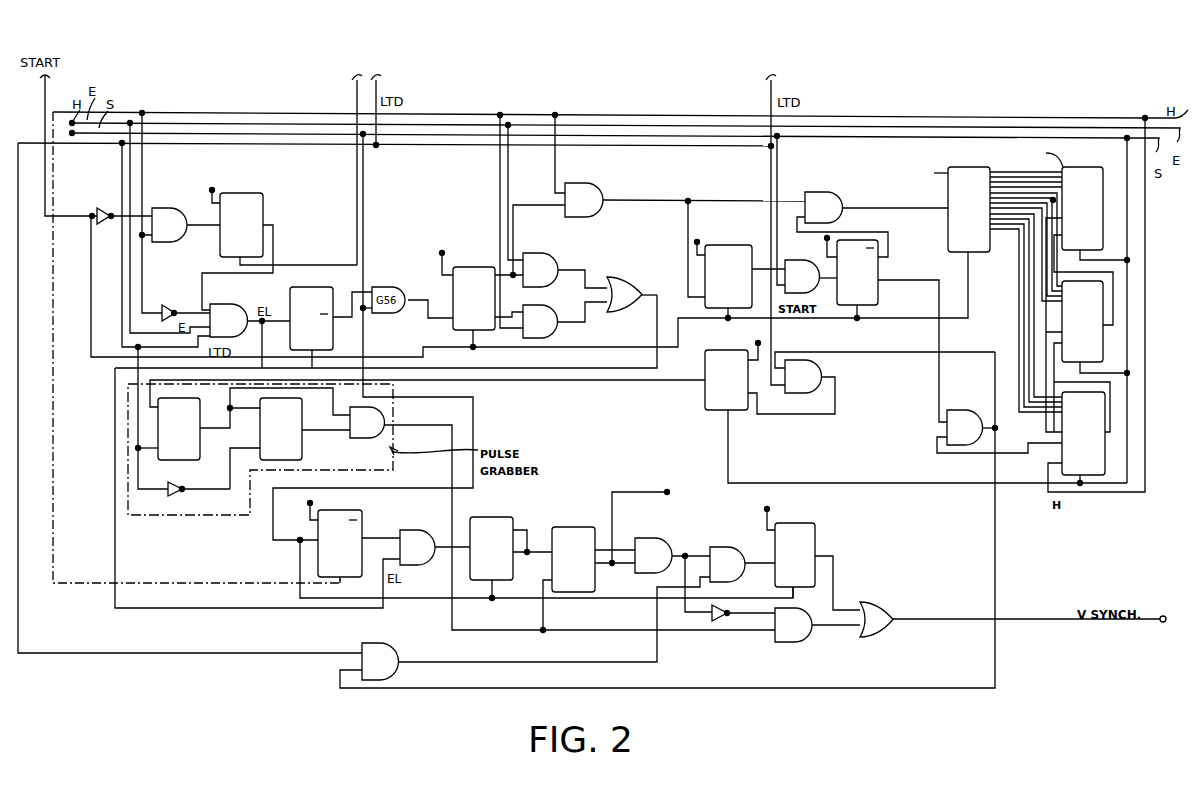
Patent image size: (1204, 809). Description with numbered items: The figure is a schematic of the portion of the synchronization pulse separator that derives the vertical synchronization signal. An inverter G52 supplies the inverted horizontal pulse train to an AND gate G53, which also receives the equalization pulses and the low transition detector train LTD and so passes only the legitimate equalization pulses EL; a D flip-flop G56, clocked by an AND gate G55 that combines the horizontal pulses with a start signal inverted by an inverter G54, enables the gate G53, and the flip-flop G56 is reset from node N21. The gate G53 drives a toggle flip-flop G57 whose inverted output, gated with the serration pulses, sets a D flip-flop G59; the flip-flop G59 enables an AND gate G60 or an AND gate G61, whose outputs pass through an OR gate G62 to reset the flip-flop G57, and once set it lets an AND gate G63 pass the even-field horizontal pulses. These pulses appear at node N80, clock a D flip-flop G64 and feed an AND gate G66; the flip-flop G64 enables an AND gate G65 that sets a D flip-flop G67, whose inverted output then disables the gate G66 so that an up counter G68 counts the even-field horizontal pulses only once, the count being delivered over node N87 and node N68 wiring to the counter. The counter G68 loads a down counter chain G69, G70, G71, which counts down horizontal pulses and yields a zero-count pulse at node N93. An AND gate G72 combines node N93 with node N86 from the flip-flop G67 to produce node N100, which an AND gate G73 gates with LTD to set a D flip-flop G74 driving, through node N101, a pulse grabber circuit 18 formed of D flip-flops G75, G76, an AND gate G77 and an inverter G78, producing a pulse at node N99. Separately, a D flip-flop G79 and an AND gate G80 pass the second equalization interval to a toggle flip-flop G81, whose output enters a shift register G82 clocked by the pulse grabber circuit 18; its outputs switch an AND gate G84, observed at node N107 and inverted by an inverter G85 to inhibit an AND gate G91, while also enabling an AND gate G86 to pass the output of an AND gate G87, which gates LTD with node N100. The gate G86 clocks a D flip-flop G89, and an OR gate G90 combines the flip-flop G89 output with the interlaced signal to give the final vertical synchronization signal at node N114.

The inverter G52 is at (178, 306).
The AND gate G53 is at (250, 320).
The inverter G54 is at (118, 205).
The AND gate G55 is at (181, 225).
The D flip-flop G56 is at (278, 242).
The toggle flip-flop G57 is at (331, 318).
The D flip-flop G59 is at (496, 276).
The AND gate G60 is at (565, 320).
The AND gate G61 is at (565, 270).
The OR gate G62 is at (632, 294).
The AND gate G63 is at (584, 200).
The D flip-flop G64 is at (739, 272).
The AND gate G65 is at (811, 276).
The AND gate G66 is at (842, 224).
The D flip-flop G67 is at (831, 276).
The up counter G68 is at (969, 280).
The down counter G69 is at (1082, 434).
The down counter G70 is at (1088, 356).
The down counter G71 is at (1088, 299).
The AND gate G72 is at (972, 427).
The AND gate G73 is at (803, 376).
The D flip-flop G74 is at (638, 405).
The D flip-flop G75 is at (254, 424).
The D flip-flop G76 is at (290, 443).
The AND gate G77 is at (367, 422).
The inverter G78 is at (199, 483).
The D flip-flop G79 is at (351, 539).
The AND gate G80 is at (435, 547).
The toggle flip-flop G81 is at (511, 559).
The shift register G82 is at (589, 578).
The AND gate G84 is at (673, 575).
The inverter G85 is at (727, 608).
The AND gate G86 is at (586, 604).
The AND gate G87 is at (356, 659).
The D flip-flop G89 is at (803, 551).
The OR gate G90 is at (876, 619).
The AND gate G91 is at (817, 625).
The node N21 is at (344, 170).
The node N68 is at (110, 222).
The node N80 is at (704, 242).
The node N86 is at (912, 343).
The node N87 is at (895, 200).
The node N93 is at (999, 445).
The node N99 is at (580, 520).
The node N100 is at (667, 512).
The node N101 is at (791, 395).
The node N107 is at (641, 519).
The node N114 is at (1029, 613).
The pulse grabber circuit 18 is at (122, 435).